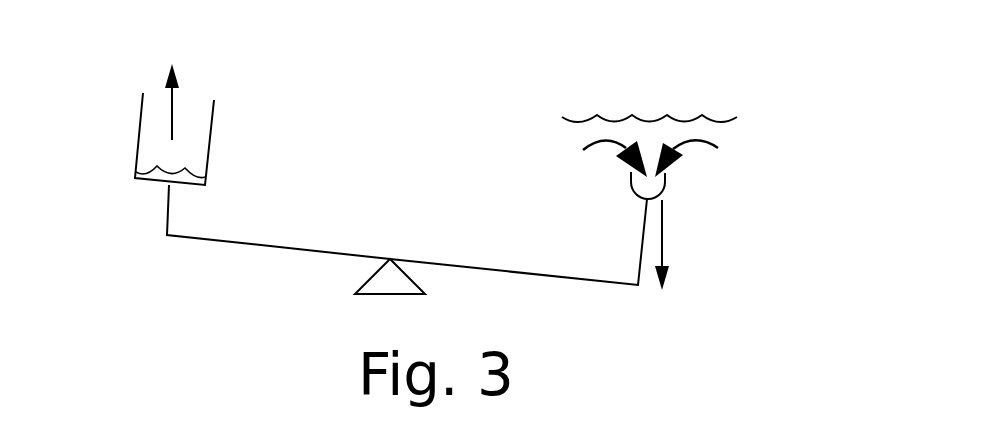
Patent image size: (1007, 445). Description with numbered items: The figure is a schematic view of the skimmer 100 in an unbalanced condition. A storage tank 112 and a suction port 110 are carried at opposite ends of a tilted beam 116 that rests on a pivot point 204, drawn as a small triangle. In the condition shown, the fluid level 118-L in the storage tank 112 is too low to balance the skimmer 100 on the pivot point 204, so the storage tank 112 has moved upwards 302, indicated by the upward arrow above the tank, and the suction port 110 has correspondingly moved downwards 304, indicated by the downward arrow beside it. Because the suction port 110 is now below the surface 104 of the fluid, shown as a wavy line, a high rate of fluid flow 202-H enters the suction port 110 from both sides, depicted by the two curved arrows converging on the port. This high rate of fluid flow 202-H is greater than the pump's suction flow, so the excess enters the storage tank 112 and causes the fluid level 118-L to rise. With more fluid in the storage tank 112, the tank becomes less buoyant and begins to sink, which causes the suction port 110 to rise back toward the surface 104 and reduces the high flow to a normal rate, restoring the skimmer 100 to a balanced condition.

The skimmer 100 is at (751, 47).
The surface 104 is at (622, 122).
The suction port 110 is at (630, 187).
The storage tank 112 is at (210, 148).
The beam 116 is at (316, 249).
The fluid level 118-L is at (140, 167).
The high rate of fluid flow 202-H is at (583, 152).
The pivot point 204 is at (390, 258).
The upwards movement 302 is at (173, 105).
The downwards movement 304 is at (659, 229).